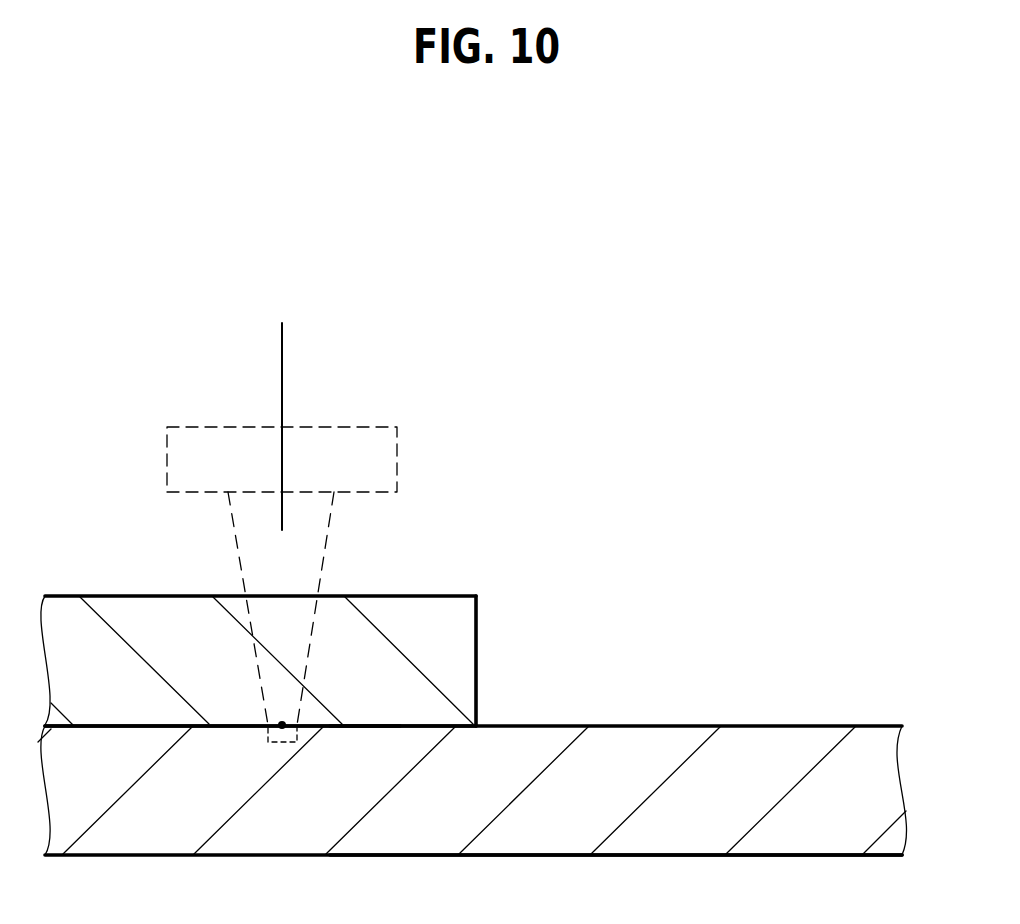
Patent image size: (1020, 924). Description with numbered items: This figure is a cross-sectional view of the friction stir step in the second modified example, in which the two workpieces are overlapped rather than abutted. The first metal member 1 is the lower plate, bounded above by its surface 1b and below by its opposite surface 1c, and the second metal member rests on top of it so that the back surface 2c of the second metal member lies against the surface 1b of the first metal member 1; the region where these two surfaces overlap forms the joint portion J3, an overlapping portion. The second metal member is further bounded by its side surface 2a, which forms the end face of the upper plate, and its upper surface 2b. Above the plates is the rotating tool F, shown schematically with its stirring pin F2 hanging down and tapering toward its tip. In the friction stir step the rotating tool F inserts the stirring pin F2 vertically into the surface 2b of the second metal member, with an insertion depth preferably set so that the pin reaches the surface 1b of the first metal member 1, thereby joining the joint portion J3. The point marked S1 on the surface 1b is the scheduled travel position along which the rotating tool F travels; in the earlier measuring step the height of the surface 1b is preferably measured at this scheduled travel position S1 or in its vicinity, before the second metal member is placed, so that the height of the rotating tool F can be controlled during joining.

The first metal member 1 is at (474, 763).
The surface of first metal member 1b is at (765, 726).
The lower surface of first member 1c is at (690, 855).
The side surface of second metal member 2a is at (477, 617).
The surface of second metal member 2b is at (415, 596).
The back surface of second metal member 2c is at (143, 726).
The rotating tool F is at (369, 413).
The stirring pin F2 is at (328, 540).
The scheduled travel position S1 is at (282, 726).
The joint portion J3 is at (365, 728).